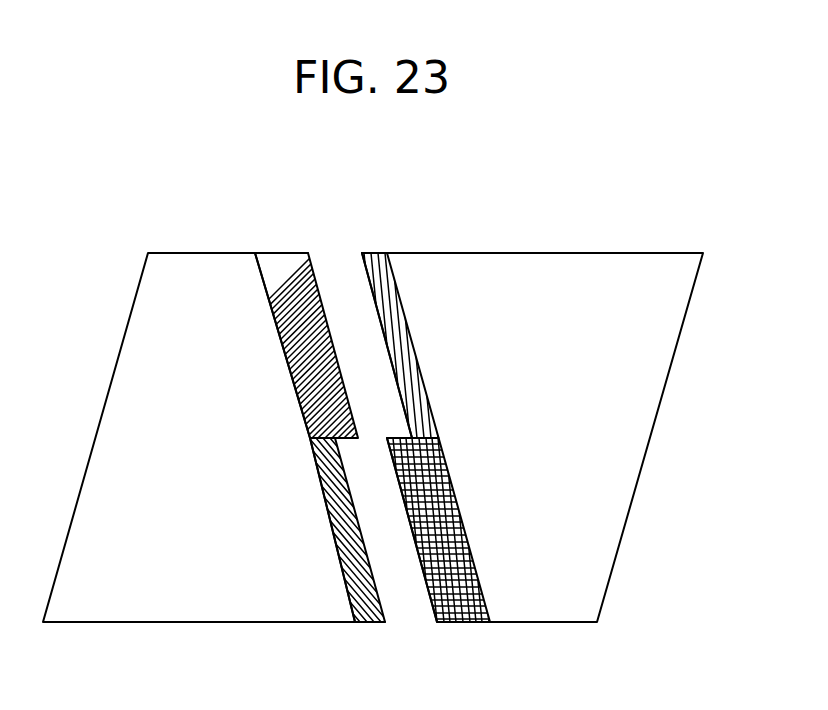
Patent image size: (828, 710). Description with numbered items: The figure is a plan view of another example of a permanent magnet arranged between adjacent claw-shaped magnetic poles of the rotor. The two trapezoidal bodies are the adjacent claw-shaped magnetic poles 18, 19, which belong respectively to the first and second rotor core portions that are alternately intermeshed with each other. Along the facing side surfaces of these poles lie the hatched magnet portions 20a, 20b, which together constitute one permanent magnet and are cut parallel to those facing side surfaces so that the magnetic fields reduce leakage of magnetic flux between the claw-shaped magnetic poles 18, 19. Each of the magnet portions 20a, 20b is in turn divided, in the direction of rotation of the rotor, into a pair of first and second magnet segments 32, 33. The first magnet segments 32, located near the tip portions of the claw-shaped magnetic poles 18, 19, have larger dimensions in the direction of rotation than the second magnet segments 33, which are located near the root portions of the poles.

The claw-shaped magnetic pole 18 is at (145, 364).
The claw-shaped magnetic pole 19 is at (643, 383).
The magnet portion 20a is at (275, 253).
The magnet portion 20b is at (373, 253).
The first magnet segment 32 is at (298, 288).
The second magnet segment 33 is at (390, 303).